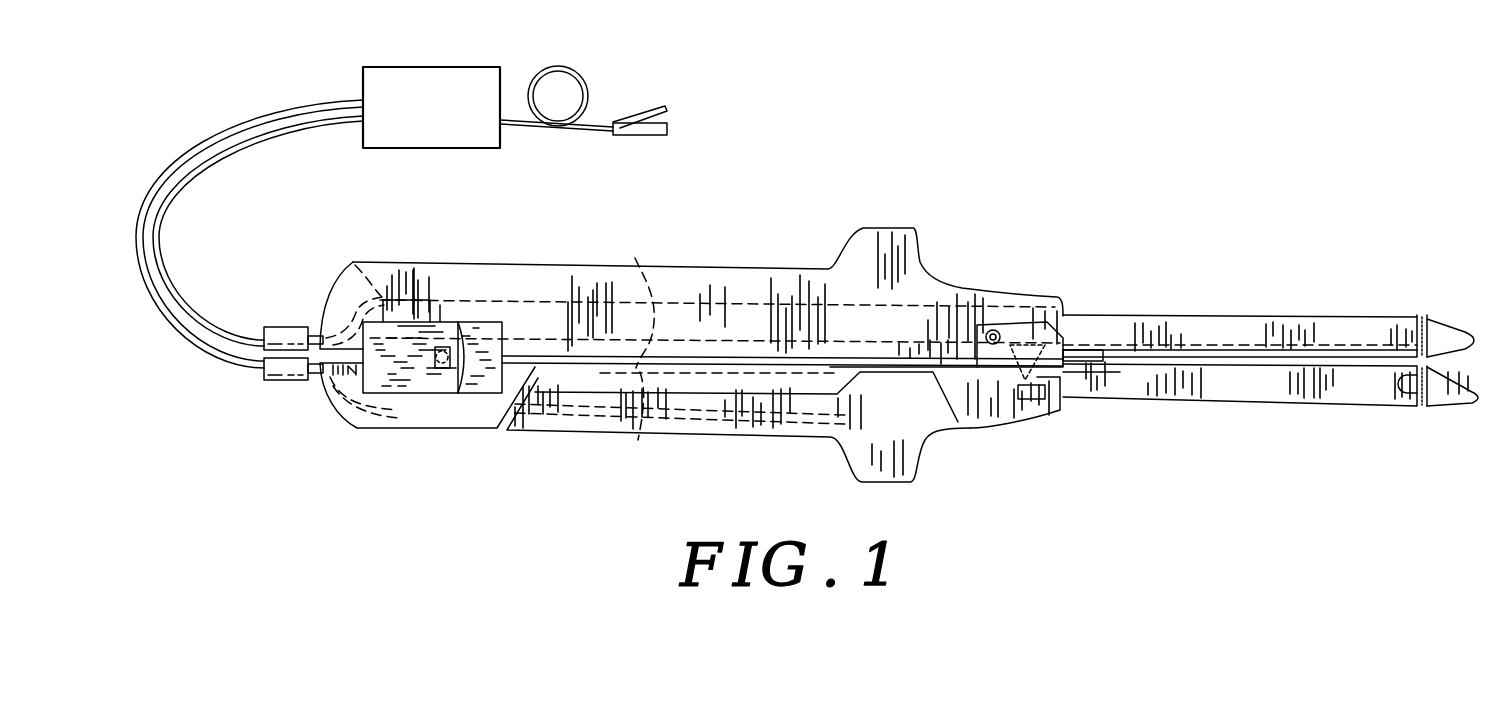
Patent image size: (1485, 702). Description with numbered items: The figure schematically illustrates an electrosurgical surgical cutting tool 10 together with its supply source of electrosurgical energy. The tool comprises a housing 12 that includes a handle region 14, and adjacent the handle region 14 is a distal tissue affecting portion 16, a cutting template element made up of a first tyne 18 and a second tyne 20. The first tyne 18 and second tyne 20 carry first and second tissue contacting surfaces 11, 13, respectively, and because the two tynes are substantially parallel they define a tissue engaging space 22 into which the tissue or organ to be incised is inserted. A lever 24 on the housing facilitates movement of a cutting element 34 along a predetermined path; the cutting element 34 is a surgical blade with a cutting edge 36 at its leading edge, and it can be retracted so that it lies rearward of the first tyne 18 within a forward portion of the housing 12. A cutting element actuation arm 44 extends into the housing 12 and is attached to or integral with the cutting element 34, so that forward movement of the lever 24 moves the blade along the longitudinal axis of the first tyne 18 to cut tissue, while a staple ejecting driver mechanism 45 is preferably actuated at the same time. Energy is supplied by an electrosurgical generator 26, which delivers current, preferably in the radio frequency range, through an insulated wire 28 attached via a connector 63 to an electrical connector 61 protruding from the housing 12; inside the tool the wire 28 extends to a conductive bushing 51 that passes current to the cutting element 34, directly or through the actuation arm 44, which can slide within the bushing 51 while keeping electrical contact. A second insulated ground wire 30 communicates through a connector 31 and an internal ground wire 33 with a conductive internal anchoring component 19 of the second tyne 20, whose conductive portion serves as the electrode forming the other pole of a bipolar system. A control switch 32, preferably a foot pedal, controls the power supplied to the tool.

The surgical cutting tool 10 is at (680, 230).
The first tissue contacting surface 11 is at (1198, 353).
The housing 12 is at (525, 263).
The second tissue contacting surface 13 is at (1140, 352).
The handle region 14 is at (428, 272).
The tissue affecting portion 16 is at (1275, 315).
The first tyne 18 is at (1240, 383).
The conductive internal anchoring component 19 is at (733, 317).
The second tyne 20 is at (1120, 330).
The tissue engaging space 22 is at (1343, 350).
The lever 24 is at (440, 393).
The electrosurgical generator 26 is at (441, 113).
The insulated wire 28 is at (292, 105).
The insulated ground wire 30 is at (270, 138).
The connector 31 is at (320, 338).
The control switch 32 is at (653, 133).
The internal ground wire 33 is at (353, 265).
The cutting element 34 is at (1033, 293).
The cutting edge 36 is at (1070, 343).
The cutting element actuation arm 44 is at (637, 299).
The driver mechanism 45 is at (636, 440).
The conductive bushing 51 is at (1023, 427).
The electrical connector 61 is at (293, 395).
The connector 63 is at (272, 373).